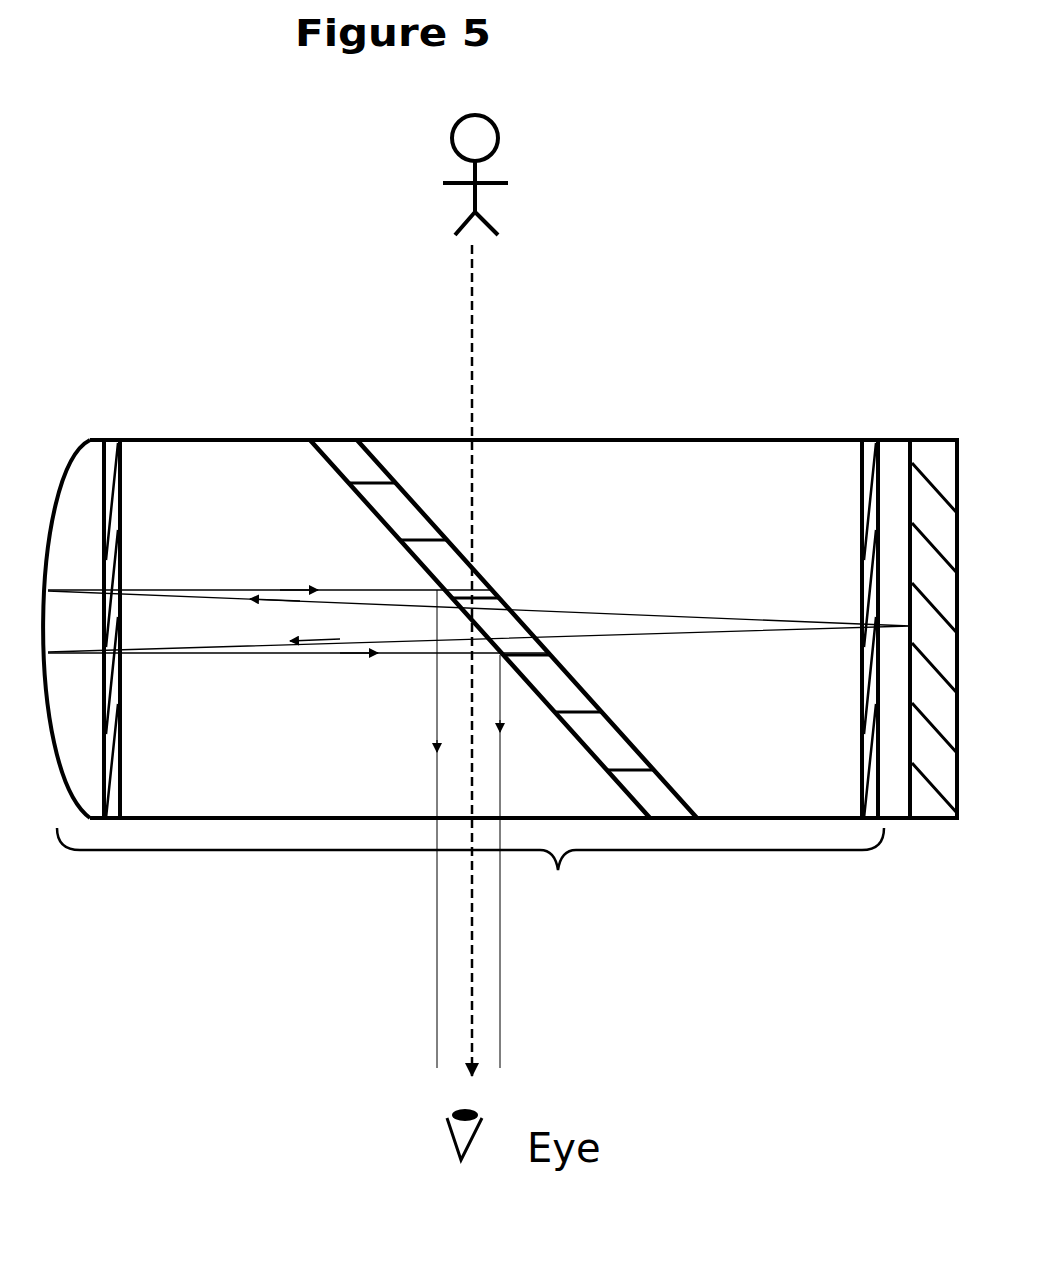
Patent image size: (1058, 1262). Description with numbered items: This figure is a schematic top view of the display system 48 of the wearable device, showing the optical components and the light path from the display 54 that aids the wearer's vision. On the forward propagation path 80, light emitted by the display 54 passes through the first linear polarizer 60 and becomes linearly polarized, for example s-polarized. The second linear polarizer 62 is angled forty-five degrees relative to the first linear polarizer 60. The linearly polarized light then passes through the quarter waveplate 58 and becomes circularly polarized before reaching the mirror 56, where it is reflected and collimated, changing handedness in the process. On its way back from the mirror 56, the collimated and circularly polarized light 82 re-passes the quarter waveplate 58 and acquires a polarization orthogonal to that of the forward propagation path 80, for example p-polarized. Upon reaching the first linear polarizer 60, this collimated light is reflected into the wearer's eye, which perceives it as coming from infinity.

The display system 48 is at (507, 679).
The display 54 is at (933, 438).
The mirror 56 is at (57, 484).
The quarter waveplate 58 is at (122, 512).
The first linear polarizer 60 is at (862, 488).
The second linear polarizer 62 is at (410, 497).
The forward propagation path 80 is at (272, 638).
The collimated and circularly polarized light 82 is at (378, 656).